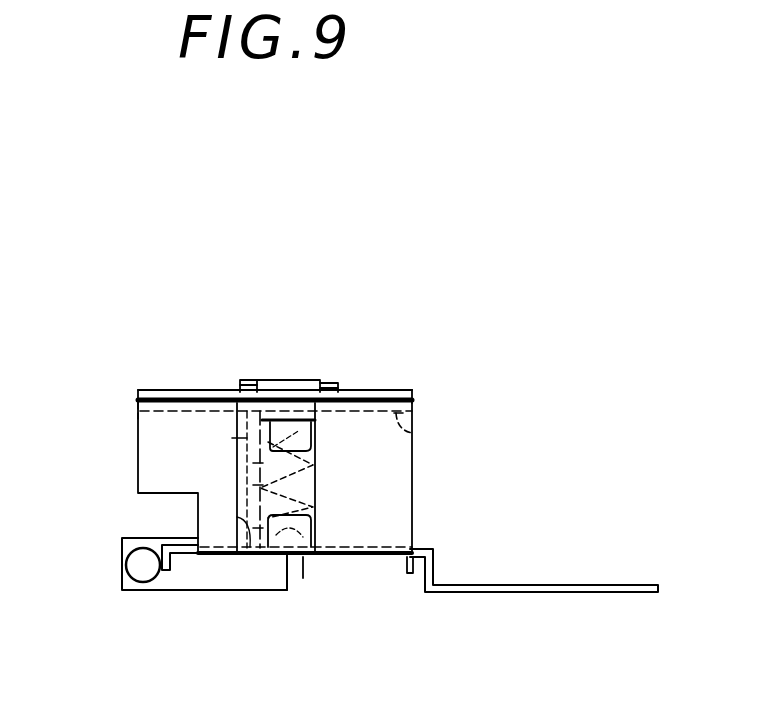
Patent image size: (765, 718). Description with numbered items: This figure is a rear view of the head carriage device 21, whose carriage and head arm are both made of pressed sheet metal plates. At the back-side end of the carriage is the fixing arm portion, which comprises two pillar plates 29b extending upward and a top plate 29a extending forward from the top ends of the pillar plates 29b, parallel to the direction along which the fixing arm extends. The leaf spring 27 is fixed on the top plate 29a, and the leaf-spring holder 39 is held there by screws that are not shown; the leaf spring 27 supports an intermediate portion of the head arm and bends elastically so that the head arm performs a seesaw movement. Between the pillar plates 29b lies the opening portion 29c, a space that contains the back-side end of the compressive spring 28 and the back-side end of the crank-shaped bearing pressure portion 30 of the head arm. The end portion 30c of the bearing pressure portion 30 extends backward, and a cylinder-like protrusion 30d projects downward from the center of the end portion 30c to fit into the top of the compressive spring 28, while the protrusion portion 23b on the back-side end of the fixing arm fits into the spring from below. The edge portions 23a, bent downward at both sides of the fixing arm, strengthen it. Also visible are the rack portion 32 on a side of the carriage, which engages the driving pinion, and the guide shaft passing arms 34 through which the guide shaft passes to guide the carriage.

The head carriage device 21 is at (330, 171).
The leaf spring 27 is at (368, 392).
The compressive spring 28 is at (236, 468).
The top plate 29a is at (155, 388).
The pillar plates 29b is at (157, 463).
The opening portion 29c is at (245, 553).
The bearing pressure portion 30 is at (313, 378).
The end portion 30c is at (246, 439).
The protrusion 30d is at (199, 390).
The rack portion 32 is at (572, 585).
The guide shaft passing arms 34 is at (122, 560).
The leaf-spring holder 39 is at (388, 392).
The edge portions 23a is at (178, 560).
The protrusion portion 23b is at (301, 560).